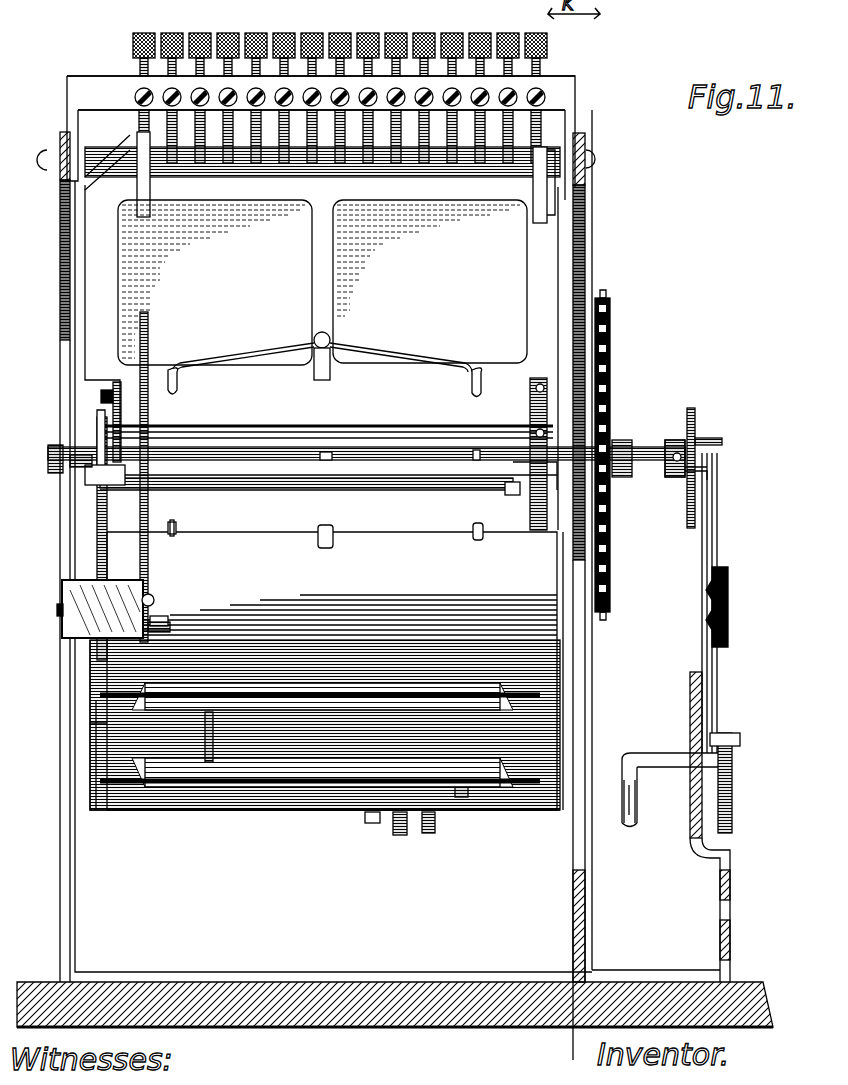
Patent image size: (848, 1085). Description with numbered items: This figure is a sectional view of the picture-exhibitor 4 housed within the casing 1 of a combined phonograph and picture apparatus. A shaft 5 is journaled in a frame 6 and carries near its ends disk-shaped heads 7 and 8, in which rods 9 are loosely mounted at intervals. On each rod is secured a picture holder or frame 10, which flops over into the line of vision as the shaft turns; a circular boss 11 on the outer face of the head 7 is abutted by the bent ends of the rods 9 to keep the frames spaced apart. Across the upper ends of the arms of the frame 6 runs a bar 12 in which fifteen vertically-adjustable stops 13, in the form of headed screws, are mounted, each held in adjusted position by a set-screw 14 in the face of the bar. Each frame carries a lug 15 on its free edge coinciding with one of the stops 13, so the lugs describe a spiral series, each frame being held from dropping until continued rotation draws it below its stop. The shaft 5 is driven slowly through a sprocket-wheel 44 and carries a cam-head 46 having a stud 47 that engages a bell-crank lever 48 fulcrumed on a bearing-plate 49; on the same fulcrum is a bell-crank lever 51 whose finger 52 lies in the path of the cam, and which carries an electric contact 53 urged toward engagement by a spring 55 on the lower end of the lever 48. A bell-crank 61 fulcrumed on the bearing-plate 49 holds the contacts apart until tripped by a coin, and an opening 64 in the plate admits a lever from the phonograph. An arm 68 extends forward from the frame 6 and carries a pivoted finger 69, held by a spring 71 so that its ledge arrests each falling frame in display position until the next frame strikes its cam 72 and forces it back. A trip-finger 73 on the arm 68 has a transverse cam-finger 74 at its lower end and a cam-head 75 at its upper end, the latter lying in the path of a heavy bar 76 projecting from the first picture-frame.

The casing 1 is at (390, 1028).
The picture-exhibitor 4 is at (322, 374).
The shaft 5 is at (50, 450).
The frame 6 is at (60, 222).
The disk-shaped head 7 is at (530, 405).
The disk-shaped head 8 is at (118, 400).
The rod 9 is at (101, 398).
The picture holder or frame 10 is at (543, 267).
The circular boss 11 is at (553, 398).
The bar 12 is at (576, 92).
The vertically-adjustable stop 13 is at (450, 33).
The set-screw 14 is at (168, 90).
The lug 15 is at (137, 140).
The sprocket-wheel 44 is at (610, 362).
The cam-head 46 is at (693, 412).
The stud 47 is at (716, 440).
The bell-crank lever 48 is at (710, 495).
The bearing-plate 49 is at (690, 712).
The bell-crank lever 51 is at (718, 538).
The finger 52 is at (675, 470).
The electric contact 53 is at (730, 615).
The spring 55 is at (735, 808).
The bell-crank 61 is at (637, 815).
The opening 64 is at (690, 760).
The arm 68 is at (62, 625).
The finger 69 is at (148, 535).
The spring 71 is at (160, 618).
The cam 72 is at (148, 335).
The trip-finger 73 is at (97, 520).
The cam-finger 74 is at (210, 762).
The cam-head 75 is at (98, 425).
The bar 76 is at (90, 505).